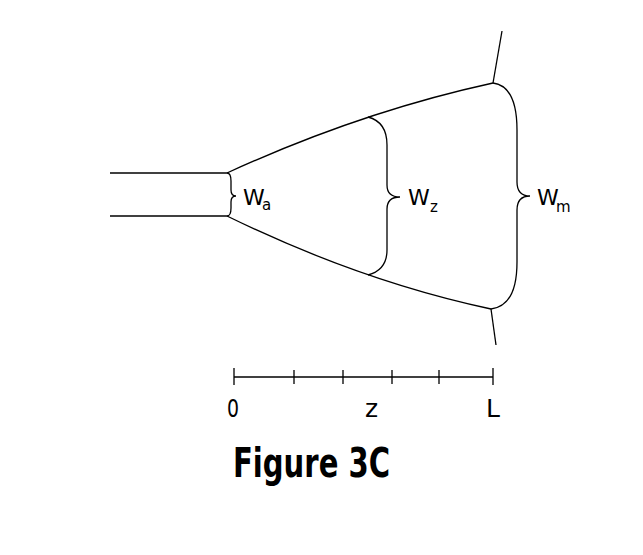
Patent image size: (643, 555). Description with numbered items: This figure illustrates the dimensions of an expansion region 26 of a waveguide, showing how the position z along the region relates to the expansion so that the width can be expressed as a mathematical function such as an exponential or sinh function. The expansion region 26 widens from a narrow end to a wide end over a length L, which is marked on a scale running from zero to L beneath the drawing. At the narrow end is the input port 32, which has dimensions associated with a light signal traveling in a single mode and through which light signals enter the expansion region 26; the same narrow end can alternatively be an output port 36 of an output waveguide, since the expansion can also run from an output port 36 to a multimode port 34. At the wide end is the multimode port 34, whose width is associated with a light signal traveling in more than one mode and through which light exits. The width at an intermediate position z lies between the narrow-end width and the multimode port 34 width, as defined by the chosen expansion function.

The expansion region 26 is at (346, 84).
The input port 32 is at (226, 189).
The multimode port 34 is at (497, 172).
The output port 36 is at (222, 199).